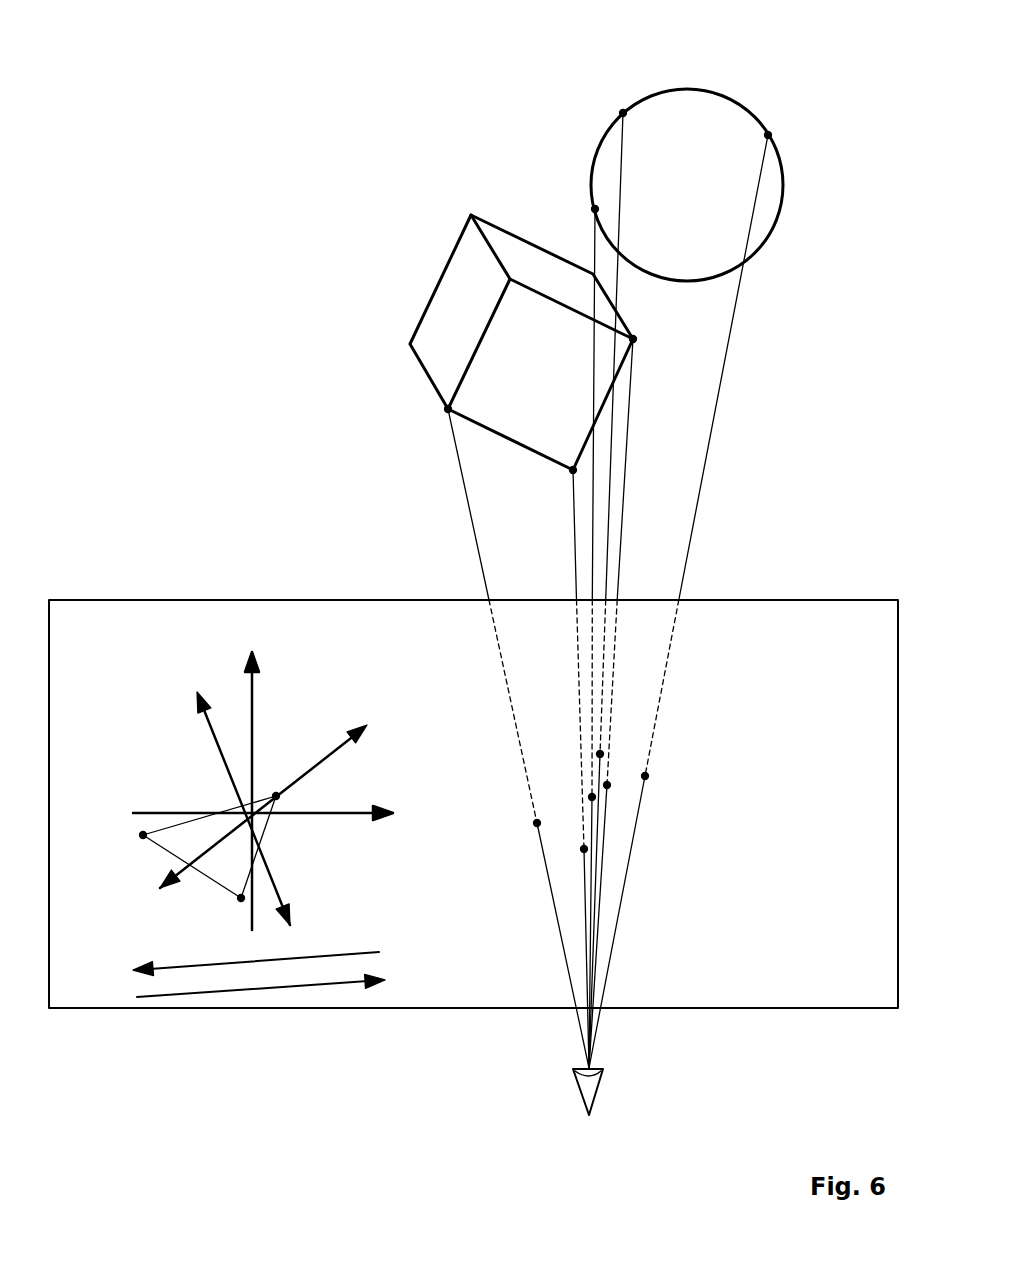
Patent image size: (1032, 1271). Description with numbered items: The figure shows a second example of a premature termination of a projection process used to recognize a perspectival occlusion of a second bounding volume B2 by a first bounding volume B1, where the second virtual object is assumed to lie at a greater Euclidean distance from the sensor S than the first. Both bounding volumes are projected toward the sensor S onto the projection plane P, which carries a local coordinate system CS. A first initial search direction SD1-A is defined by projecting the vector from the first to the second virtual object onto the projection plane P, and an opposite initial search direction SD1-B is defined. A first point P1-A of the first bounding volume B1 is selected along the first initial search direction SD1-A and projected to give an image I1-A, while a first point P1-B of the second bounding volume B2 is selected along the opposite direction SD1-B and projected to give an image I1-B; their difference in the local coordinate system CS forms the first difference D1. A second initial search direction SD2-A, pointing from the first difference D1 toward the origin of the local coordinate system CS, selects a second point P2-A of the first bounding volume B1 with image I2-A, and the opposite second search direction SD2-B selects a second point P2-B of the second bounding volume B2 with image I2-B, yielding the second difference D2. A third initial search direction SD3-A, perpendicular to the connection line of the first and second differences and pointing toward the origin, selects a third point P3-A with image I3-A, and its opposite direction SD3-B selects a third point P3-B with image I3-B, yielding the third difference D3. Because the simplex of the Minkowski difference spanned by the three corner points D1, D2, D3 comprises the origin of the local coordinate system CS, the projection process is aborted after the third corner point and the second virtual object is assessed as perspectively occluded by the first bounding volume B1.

The first bounding volume B1 is at (435, 287).
The second bounding volume B2 is at (684, 88).
The first point of the first bounding volume P1-A is at (633, 339).
The second point of the first bounding volume P2-A is at (448, 409).
The third point of the first bounding volume P3-A is at (573, 470).
The first point of the second bounding volume P1-B is at (595, 209).
The second point of the second bounding volume P2-B is at (768, 135).
The third point of the second bounding volume P3-B is at (623, 113).
The image of the first point of the first bounding volume I1-A is at (607, 785).
The image of the second point of the first bounding volume I2-A is at (537, 823).
The image of the third point of the first bounding volume I3-A is at (584, 849).
The image of the first point of the second bounding volume I1-B is at (592, 797).
The image of the second point of the second bounding volume I2-B is at (645, 776).
The image of the third point of the second bounding volume I3-B is at (600, 754).
The projection plane P is at (798, 600).
The sensor S is at (597, 1090).
The local coordinate system CS is at (206, 636).
The first difference D1 is at (276, 796).
The second difference D2 is at (143, 835).
The third difference D3 is at (241, 898).
The first initial search direction SD1-A is at (281, 988).
The opposite initial search direction SD1-B is at (355, 952).
The second initial search direction SD2-A is at (173, 872).
The second opposite search direction SD2-B is at (337, 740).
The third initial search direction SD3-A is at (273, 878).
The third opposite search direction SD3-B is at (207, 732).